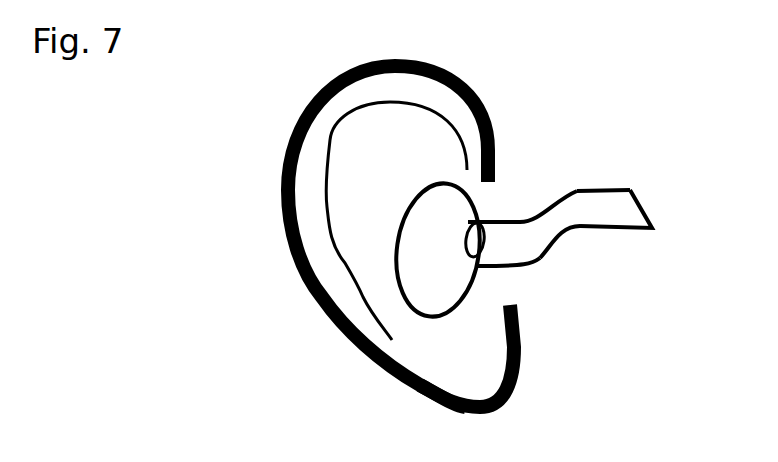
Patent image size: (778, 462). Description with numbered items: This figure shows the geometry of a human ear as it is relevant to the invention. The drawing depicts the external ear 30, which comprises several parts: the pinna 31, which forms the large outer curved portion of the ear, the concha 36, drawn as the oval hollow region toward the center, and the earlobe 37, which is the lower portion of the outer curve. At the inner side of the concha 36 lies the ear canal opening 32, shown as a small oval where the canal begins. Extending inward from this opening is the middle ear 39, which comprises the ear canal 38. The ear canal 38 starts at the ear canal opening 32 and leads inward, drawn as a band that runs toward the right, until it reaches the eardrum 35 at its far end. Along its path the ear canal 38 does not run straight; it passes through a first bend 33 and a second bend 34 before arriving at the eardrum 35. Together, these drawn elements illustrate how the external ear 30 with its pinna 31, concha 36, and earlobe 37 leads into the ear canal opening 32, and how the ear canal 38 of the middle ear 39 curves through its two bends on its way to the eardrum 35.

The external ear 30 is at (298, 292).
The pinna 31 is at (358, 138).
The ear canal opening 32 is at (483, 228).
The first bend 33 is at (538, 262).
The second bend 34 is at (578, 187).
The eardrum 35 is at (648, 212).
The concha 36 is at (430, 280).
The earlobe 37 is at (510, 398).
The ear canal 38 is at (560, 220).
The middle ear 39 is at (588, 275).